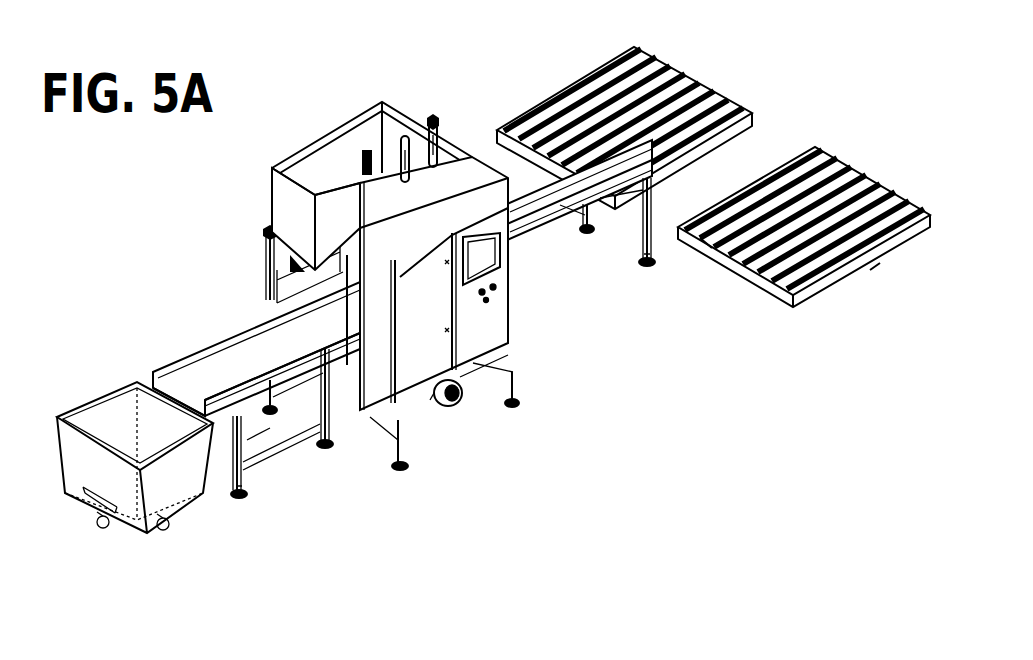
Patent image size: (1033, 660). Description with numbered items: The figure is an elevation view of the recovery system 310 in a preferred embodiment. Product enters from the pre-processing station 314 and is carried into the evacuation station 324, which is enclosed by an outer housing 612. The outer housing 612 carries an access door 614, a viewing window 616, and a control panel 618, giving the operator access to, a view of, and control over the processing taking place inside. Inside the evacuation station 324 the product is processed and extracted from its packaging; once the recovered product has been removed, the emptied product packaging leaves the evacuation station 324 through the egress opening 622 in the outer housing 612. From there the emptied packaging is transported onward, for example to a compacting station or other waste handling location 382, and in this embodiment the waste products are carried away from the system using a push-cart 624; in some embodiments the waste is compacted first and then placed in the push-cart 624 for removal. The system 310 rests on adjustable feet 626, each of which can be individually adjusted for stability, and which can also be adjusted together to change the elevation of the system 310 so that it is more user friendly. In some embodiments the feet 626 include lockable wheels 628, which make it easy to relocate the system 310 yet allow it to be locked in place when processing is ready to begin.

The system 310 is at (147, 187).
The pre-processing station 314 is at (790, 106).
The evacuation station 324 is at (332, 110).
The waste handling location 382 is at (146, 335).
The outer housing 612 is at (450, 150).
The access door 614 is at (423, 360).
The viewing window 616 is at (510, 289).
The control panel 618 is at (492, 294).
The egress opening 622 is at (271, 263).
The push-cart 624 is at (140, 513).
The adjustable feet 626 is at (240, 498).
The lockable wheels 628 is at (457, 412).